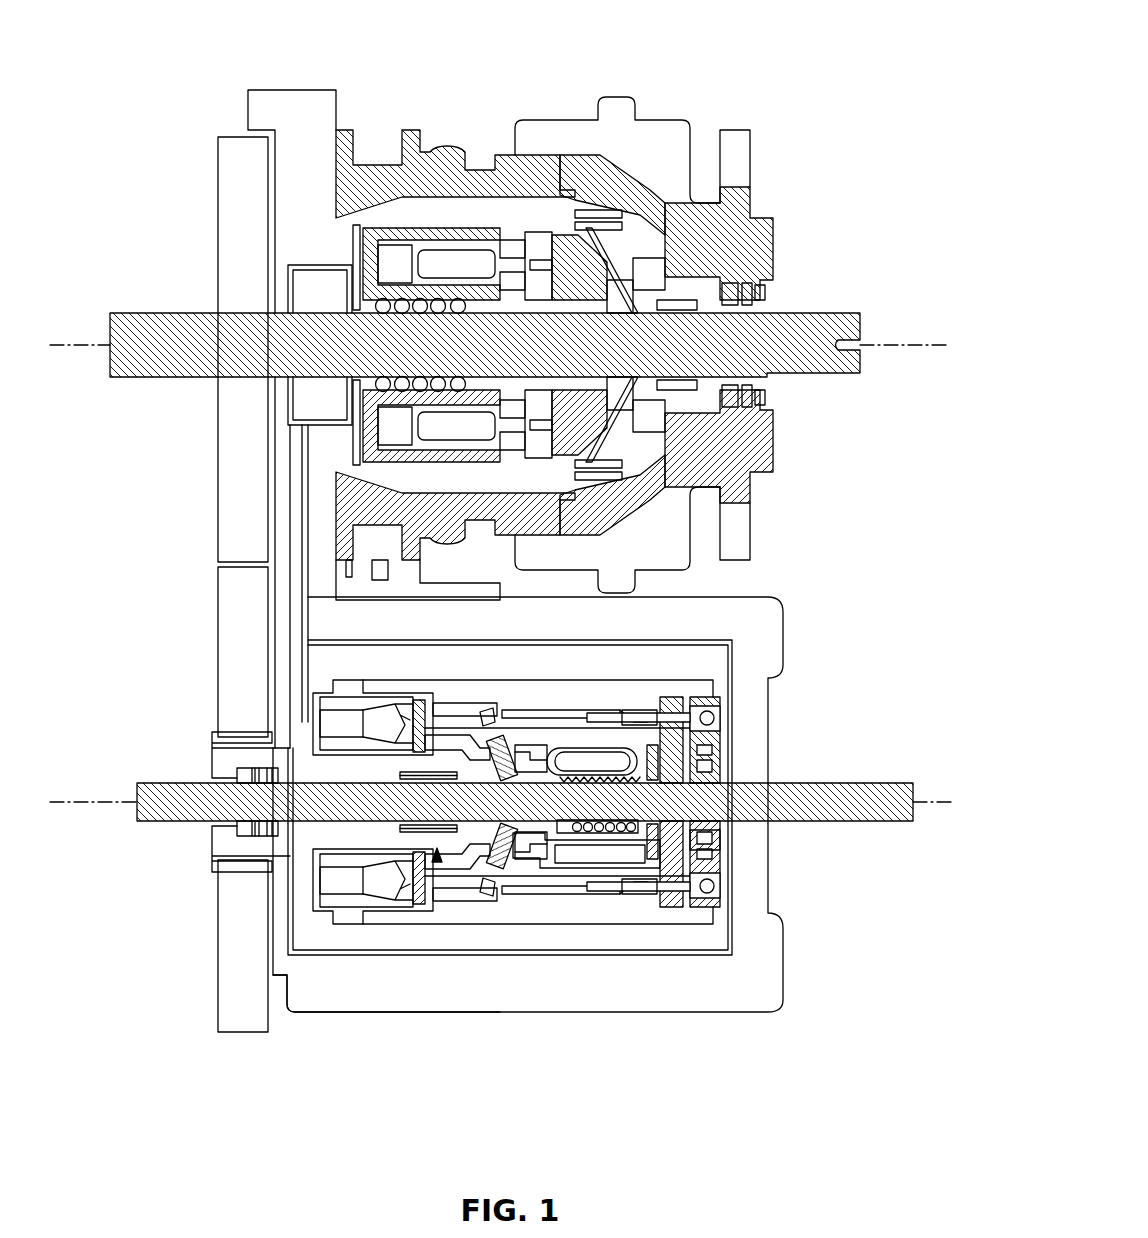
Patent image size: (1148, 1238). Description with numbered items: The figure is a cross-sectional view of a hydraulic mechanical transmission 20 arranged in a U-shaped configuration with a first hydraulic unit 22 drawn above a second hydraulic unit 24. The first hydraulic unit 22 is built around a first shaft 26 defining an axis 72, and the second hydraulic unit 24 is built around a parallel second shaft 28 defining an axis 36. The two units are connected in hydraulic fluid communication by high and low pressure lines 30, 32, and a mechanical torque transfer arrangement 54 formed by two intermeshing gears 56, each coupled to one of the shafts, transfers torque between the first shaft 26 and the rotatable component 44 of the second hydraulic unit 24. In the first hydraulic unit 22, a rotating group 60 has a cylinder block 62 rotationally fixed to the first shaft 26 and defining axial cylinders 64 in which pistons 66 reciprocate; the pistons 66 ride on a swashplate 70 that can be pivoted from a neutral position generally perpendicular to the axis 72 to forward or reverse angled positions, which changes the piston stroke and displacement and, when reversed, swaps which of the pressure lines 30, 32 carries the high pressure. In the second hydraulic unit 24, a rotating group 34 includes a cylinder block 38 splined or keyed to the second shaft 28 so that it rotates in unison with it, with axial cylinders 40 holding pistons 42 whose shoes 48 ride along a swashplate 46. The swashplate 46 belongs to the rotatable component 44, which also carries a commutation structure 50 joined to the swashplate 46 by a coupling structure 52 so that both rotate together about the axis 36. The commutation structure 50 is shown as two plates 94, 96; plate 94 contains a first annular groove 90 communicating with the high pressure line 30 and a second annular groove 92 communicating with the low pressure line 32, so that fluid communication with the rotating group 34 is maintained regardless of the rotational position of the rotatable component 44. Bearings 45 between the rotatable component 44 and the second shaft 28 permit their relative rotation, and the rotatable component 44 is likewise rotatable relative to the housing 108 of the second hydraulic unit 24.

The hydraulic mechanical transmission 20 is at (140, 50).
The first hydraulic unit 22 is at (850, 278).
The second hydraulic unit 24 is at (875, 705).
The first shaft 26 is at (165, 312).
The second shaft 28 is at (188, 823).
The high pressure line 30 is at (716, 640).
The low pressure line 32 is at (285, 445).
The rotating group 34 is at (713, 888).
The axis 36 is at (940, 803).
The cylinder block 38 is at (612, 857).
The axial cylinders 40 is at (573, 758).
The pistons 42 is at (520, 868).
The rotatable component 44 is at (437, 860).
The bearings 45 is at (237, 770).
The swashplate 46 is at (450, 868).
The shoes 48 is at (498, 858).
The commutation structure 50 is at (713, 757).
The coupling structure 52 is at (568, 888).
The mechanical torque transfer arrangement 54 is at (205, 408).
The intermeshing gears 56 is at (216, 515).
The rotating group 60 is at (430, 227).
The cylinder block 62 is at (373, 228).
The axial cylinders 64 is at (463, 243).
The pistons 66 is at (506, 246).
The swashplate 70 is at (567, 252).
The axis 72 is at (873, 346).
The first annular groove 90 is at (713, 732).
The second annular groove 92 is at (716, 843).
The plate 94 is at (713, 698).
The second plate 96 is at (670, 698).
The housing 108 is at (358, 1014).